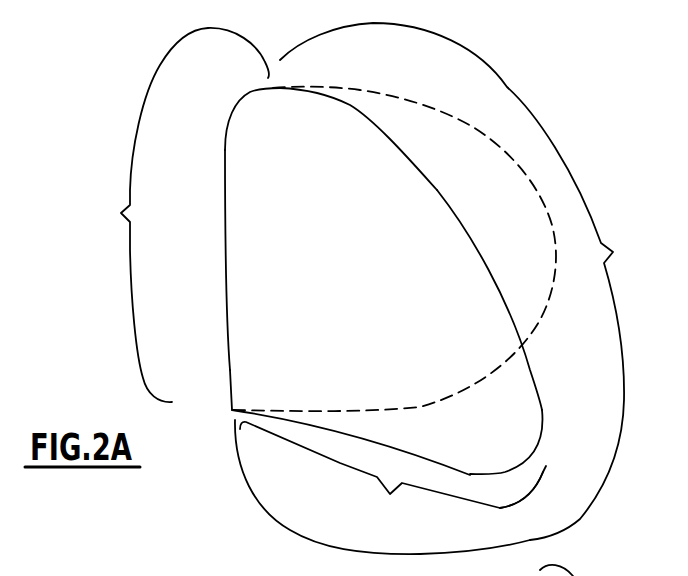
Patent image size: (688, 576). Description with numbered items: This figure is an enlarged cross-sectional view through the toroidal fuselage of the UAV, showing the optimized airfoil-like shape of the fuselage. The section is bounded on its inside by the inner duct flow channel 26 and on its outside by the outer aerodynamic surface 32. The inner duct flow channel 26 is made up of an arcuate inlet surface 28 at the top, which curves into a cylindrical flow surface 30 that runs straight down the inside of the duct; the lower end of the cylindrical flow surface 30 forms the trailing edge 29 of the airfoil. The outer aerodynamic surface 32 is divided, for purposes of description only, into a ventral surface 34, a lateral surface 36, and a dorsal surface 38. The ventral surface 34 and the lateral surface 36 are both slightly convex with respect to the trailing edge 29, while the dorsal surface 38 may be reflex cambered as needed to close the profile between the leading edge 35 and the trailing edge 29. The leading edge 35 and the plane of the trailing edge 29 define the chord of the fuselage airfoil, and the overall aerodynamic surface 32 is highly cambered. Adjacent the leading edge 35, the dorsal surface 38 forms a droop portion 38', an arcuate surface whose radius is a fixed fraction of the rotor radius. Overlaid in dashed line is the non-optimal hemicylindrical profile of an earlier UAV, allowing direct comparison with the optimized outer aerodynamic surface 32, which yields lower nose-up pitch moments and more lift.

The inner duct flow channel 26 is at (176, 215).
The arcuate inlet surface 28 is at (214, 139).
The trailing edge 29 is at (228, 418).
The cylindrical flow surface 30 is at (218, 143).
The outer aerodynamic surface 32 is at (462, 281).
The ventral surface 34 is at (286, 66).
The leading edge 35 is at (541, 444).
The lateral surface 36 is at (420, 150).
The dorsal surface 38 is at (389, 466).
The droop portion 38' is at (481, 508).
The element UAV is at (533, 164).